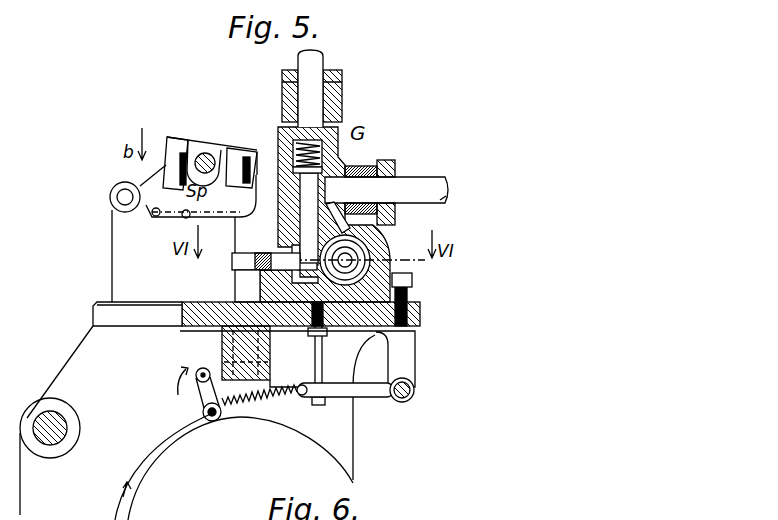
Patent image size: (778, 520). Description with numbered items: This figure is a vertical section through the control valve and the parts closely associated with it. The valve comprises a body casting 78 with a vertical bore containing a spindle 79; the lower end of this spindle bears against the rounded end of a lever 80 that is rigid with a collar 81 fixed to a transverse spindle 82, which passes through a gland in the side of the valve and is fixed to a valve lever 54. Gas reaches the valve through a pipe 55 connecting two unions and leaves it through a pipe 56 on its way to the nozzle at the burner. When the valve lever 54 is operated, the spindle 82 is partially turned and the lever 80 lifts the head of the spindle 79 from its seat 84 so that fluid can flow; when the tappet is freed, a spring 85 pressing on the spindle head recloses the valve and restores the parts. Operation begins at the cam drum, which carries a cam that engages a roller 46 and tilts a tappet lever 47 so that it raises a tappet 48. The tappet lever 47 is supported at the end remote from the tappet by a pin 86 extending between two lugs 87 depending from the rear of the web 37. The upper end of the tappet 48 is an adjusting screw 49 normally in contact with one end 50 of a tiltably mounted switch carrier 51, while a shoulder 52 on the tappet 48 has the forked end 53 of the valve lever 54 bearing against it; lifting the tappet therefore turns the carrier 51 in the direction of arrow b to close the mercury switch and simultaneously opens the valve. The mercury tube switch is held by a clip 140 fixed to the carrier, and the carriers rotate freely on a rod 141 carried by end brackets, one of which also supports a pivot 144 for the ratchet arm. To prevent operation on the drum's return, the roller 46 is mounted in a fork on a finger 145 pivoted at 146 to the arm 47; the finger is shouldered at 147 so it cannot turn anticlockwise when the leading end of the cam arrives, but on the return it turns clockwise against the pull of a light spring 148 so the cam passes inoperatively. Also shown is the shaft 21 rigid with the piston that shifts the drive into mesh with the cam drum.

The shaft 21 is at (50, 445).
The web 37 is at (345, 317).
The roller 46 is at (215, 421).
The tappet lever 47 is at (366, 397).
The tappet 48 is at (238, 298).
The adjusting screw 49 is at (257, 172).
The end of switch carrier 50 is at (241, 150).
The switch carrier 51 is at (195, 148).
The shoulder 52 is at (250, 273).
The forked end 53 is at (247, 267).
The valve lever 54 is at (275, 257).
The pipe 55 is at (312, 66).
The pipe 56 is at (440, 196).
The body casting 78 is at (345, 165).
The spindle 79 is at (316, 198).
The lever 80 is at (305, 285).
The collar 81 is at (378, 240).
The spindle 82 is at (352, 262).
The seat 84 is at (280, 165).
The spring 85 is at (341, 130).
The pin 86 is at (414, 390).
The lugs 87 is at (400, 346).
The clip 140 is at (168, 160).
The rod 141 is at (205, 152).
The pivot 144 is at (112, 203).
The finger 145 is at (208, 400).
The pivot 146 is at (201, 369).
The shoulder 147 is at (200, 397).
The light spring 148 is at (278, 408).